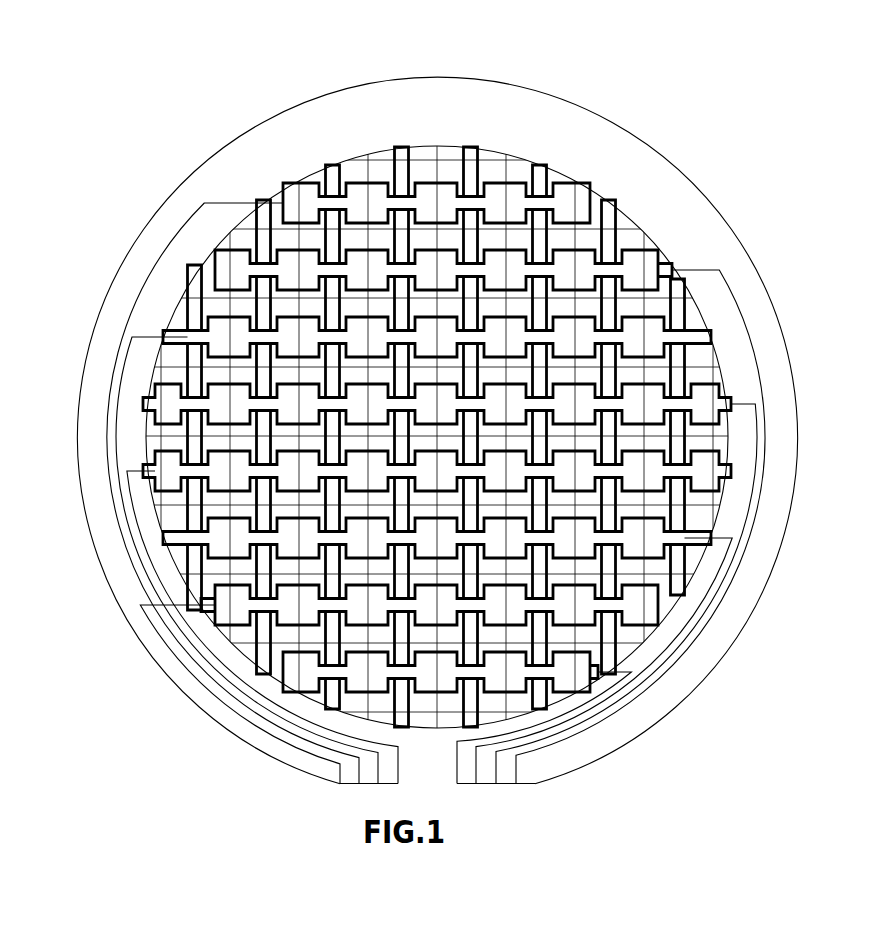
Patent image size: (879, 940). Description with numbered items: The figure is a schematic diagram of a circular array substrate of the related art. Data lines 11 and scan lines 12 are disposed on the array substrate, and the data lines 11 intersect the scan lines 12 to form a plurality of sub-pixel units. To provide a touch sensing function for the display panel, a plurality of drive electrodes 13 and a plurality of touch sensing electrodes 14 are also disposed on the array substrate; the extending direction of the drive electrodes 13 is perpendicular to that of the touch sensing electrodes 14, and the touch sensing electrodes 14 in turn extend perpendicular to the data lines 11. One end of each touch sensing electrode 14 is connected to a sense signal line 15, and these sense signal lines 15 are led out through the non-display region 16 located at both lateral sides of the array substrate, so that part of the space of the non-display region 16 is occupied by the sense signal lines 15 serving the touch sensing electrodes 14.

The data lines 11 is at (645, 243).
The scan lines 12 is at (487, 160).
The drive electrodes 13 is at (318, 172).
The touch sensing electrodes 14 is at (590, 187).
The sense signal line 15 is at (195, 218).
The non-display region 16 is at (425, 97).